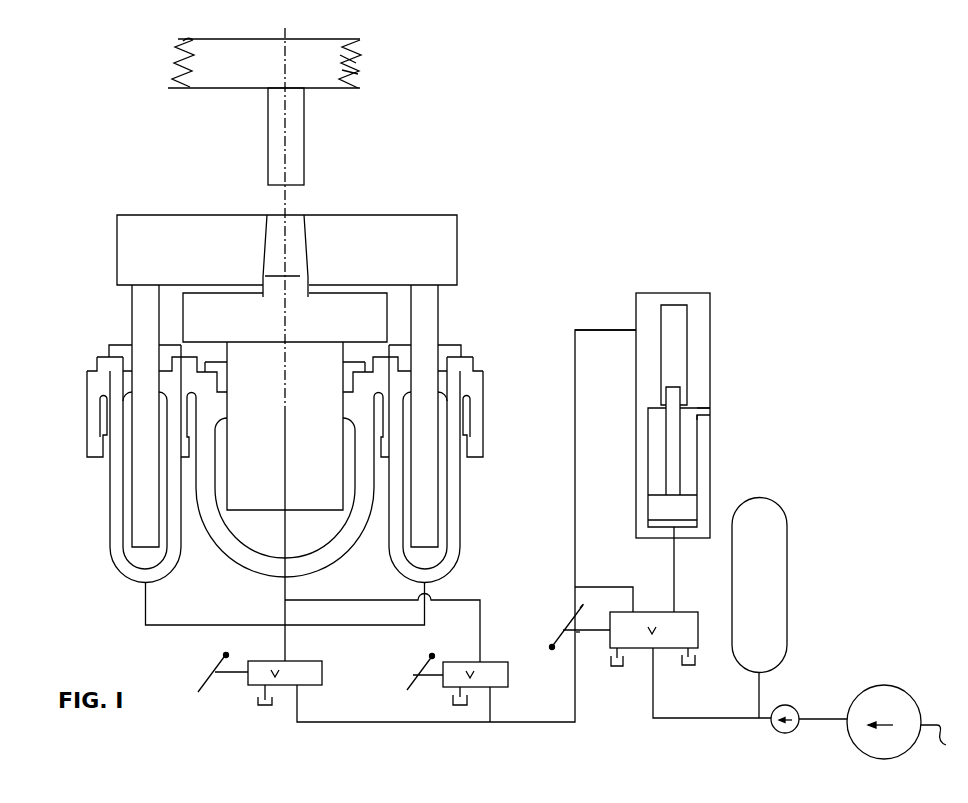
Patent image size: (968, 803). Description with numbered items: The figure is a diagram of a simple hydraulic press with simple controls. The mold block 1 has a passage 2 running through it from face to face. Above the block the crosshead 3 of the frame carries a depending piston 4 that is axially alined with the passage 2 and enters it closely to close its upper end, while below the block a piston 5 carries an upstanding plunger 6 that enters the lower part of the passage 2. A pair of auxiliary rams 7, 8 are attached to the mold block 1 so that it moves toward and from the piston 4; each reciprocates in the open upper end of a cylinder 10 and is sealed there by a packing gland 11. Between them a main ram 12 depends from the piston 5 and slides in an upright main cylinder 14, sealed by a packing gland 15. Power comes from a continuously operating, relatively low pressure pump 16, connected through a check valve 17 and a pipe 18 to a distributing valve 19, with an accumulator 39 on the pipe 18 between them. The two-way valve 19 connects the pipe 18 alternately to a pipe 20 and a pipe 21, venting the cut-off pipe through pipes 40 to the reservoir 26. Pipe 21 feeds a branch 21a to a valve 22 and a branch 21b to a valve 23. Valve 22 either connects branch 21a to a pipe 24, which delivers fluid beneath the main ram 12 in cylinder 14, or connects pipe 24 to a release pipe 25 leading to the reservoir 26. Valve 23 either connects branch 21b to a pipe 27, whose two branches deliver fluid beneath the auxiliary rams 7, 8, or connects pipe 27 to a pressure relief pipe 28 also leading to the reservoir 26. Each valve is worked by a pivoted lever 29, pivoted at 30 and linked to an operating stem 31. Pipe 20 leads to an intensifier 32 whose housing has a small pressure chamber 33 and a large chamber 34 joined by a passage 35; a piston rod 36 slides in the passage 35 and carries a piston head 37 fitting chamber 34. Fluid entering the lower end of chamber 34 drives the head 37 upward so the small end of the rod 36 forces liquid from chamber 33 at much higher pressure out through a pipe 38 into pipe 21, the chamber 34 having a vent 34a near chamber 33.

The mold block 1 is at (448, 233).
The passage 2 is at (301, 226).
The crosshead 3 is at (357, 62).
The piston 4 is at (297, 115).
The piston 5 is at (300, 329).
The plunger 6 is at (300, 283).
The auxiliary ram 7 is at (145, 307).
The auxiliary ram 8 is at (428, 333).
The cylinder 10 is at (115, 462).
The packing gland 11 is at (119, 352).
The main ram 12 is at (256, 497).
The main cylinder 14 is at (259, 558).
The packing gland 15 is at (221, 368).
The pump 16 is at (850, 700).
The check valve 17 is at (786, 705).
The pipe 18 is at (700, 718).
The distributing valve 19 is at (650, 652).
The pipe 20 is at (674, 582).
The pipe 21 is at (600, 586).
The branch 21a is at (491, 693).
The branch 21b is at (378, 723).
The valve 22 is at (483, 660).
The valve 23 is at (323, 675).
The pipe 24 is at (481, 622).
The release pipe 25 is at (455, 697).
The reservoir 26 is at (277, 704).
The pipe 27 is at (287, 647).
The pressure relief pipe 28 is at (258, 692).
The pivoted lever 29 is at (557, 630).
The pivot 30 is at (585, 598).
The operating stem 31 is at (585, 632).
The intensifier 32 is at (703, 380).
The small pressure chamber 33 is at (680, 330).
The large chamber 34 is at (698, 438).
The vent 34a is at (705, 408).
The passage 35 is at (679, 400).
The piston rod 36 is at (669, 422).
The piston head 37 is at (650, 507).
The pipe 38 is at (583, 330).
The accumulator 39 is at (778, 580).
The pipes 40 is at (613, 660).